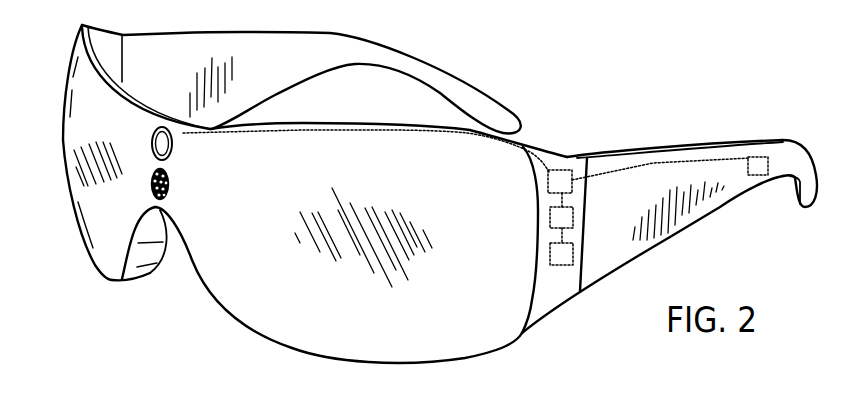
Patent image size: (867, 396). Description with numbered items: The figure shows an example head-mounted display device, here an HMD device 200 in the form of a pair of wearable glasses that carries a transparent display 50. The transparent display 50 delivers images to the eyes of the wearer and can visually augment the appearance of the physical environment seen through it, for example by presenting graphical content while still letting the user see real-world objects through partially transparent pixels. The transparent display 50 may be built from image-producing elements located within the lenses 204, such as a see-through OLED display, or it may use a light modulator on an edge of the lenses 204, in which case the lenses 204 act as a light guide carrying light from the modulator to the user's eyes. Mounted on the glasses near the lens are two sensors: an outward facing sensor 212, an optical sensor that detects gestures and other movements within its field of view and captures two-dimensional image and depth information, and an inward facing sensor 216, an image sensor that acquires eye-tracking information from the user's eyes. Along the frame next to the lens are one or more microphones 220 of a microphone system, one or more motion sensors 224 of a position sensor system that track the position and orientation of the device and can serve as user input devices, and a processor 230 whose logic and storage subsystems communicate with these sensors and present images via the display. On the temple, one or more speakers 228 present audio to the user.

The HMD device 200 is at (86, 313).
The lenses 204 is at (102, 257).
The transparent display 50 is at (240, 291).
The outward facing sensor 212 is at (175, 143).
The inward facing sensor 216 is at (172, 184).
The microphones 220 is at (563, 170).
The motion sensors 224 is at (582, 200).
The processor 230 is at (582, 237).
The speakers 228 is at (762, 157).